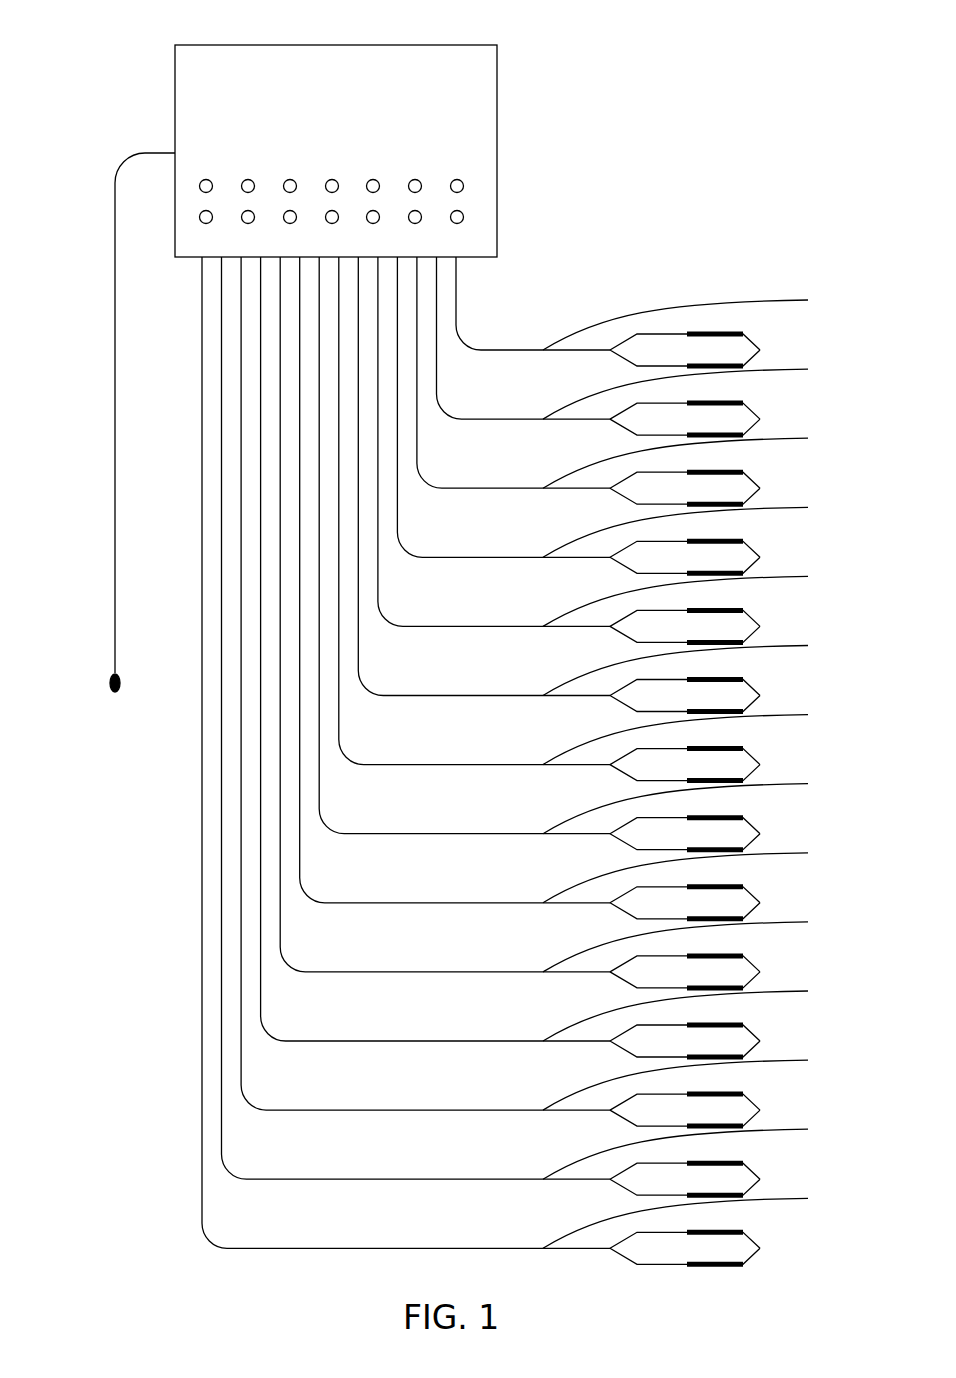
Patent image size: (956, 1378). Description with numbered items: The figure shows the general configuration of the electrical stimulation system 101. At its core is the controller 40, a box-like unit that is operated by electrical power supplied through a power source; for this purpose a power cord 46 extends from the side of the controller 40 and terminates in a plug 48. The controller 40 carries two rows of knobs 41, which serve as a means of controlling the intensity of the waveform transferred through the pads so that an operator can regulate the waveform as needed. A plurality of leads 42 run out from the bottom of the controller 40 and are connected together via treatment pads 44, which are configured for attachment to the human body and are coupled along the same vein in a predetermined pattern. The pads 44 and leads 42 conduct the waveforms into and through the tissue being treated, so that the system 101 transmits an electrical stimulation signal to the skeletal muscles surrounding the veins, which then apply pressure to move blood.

The electrical stimulation system 101 is at (128, 40).
The controller 40 is at (458, 108).
The knobs 41 is at (460, 180).
The leads 42 is at (695, 770).
The treatment pads 44 is at (760, 350).
The power cord 46 is at (115, 563).
The plug 48 is at (120, 683).